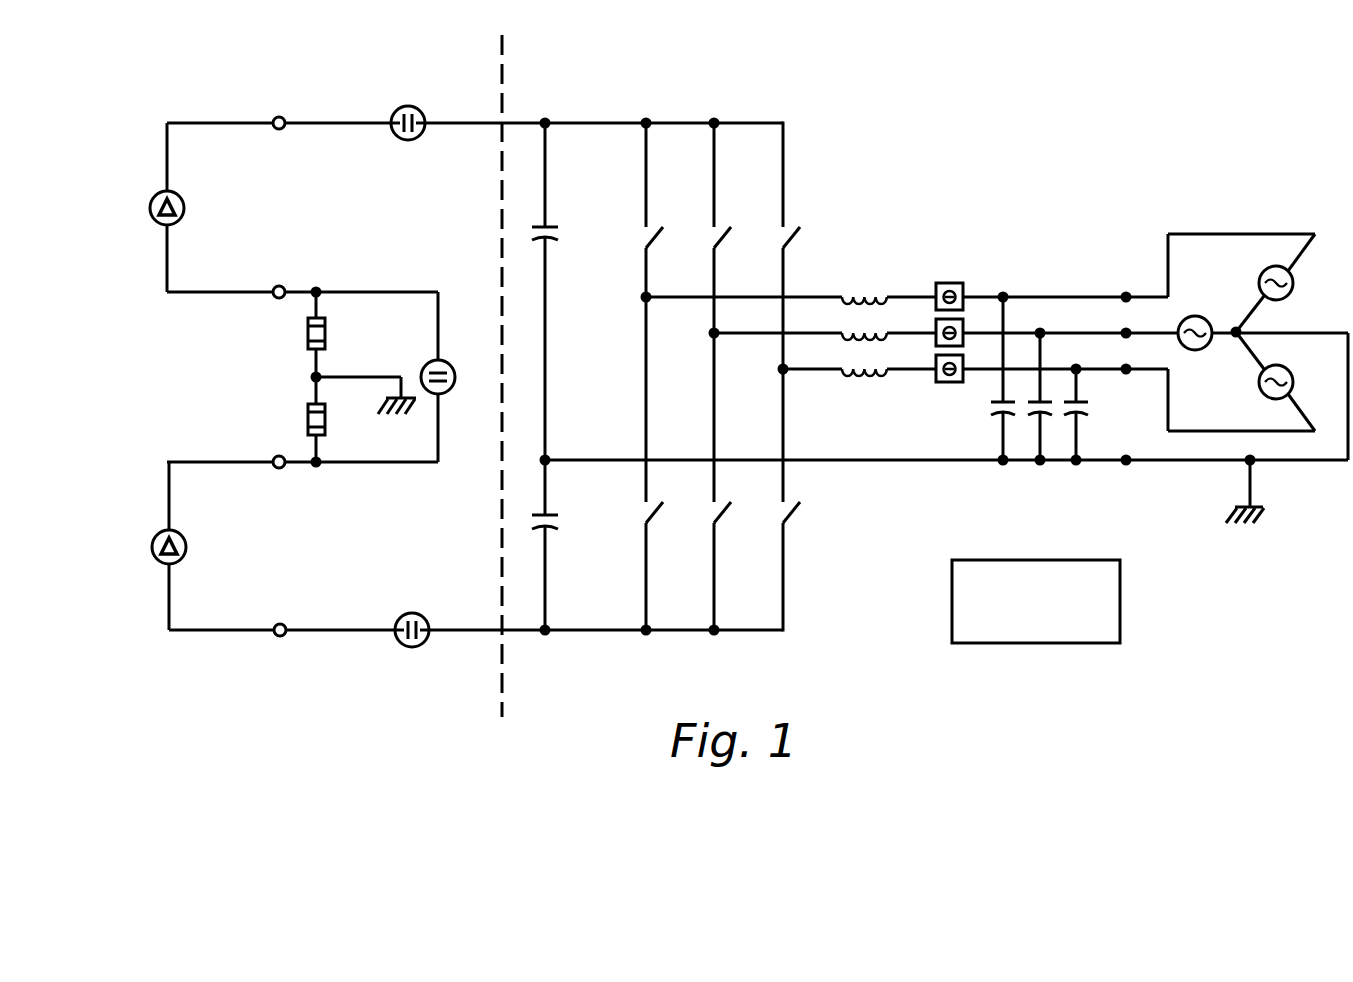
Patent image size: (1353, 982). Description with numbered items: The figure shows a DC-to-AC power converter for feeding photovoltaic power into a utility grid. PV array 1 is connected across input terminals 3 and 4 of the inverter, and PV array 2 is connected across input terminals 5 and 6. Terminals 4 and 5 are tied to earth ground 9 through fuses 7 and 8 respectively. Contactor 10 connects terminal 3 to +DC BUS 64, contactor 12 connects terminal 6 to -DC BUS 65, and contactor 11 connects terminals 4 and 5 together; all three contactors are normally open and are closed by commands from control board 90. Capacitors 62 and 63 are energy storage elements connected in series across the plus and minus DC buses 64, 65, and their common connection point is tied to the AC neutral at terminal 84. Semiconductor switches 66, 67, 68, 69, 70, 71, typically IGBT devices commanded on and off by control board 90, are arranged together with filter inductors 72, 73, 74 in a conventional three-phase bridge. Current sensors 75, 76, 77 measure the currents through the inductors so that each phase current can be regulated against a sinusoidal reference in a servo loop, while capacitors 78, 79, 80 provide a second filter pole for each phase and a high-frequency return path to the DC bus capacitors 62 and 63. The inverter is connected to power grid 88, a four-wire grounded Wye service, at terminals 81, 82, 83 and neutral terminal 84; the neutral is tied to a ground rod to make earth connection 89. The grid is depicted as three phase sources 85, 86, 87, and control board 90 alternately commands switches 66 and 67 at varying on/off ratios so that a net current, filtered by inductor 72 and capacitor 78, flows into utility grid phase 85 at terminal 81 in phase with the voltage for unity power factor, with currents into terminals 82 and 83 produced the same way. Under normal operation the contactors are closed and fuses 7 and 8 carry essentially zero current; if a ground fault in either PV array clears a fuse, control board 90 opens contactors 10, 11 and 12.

The PV array 1 is at (161, 207).
The PV array 2 is at (162, 546).
The input terminal 3 is at (279, 107).
The input terminal 4 is at (279, 276).
The input terminal 5 is at (279, 447).
The input terminal 6 is at (281, 614).
The fuse 7 is at (305, 333).
The fuse 8 is at (306, 420).
The earth ground 9 is at (366, 414).
The contactor 10 is at (408, 108).
The contactor 11 is at (455, 377).
The contactor 12 is at (412, 647).
The capacitor 62 is at (563, 291).
The capacitor 63 is at (563, 545).
The +DC BUS 64 is at (664, 105).
The -DC BUS 65 is at (678, 651).
The semiconductor switch 66 is at (665, 291).
The semiconductor switch 67 is at (665, 545).
The semiconductor switch 68 is at (733, 291).
The semiconductor switch 69 is at (733, 545).
The semiconductor switch 70 is at (802, 291).
The semiconductor switch 71 is at (802, 546).
The filter inductor 72 is at (864, 282).
The filter inductor 73 is at (881, 321).
The filter inductor 74 is at (864, 391).
The current sensor 75 is at (949, 280).
The current sensor 76 is at (967, 325).
The current sensor 77 is at (949, 386).
The capacitor 78 is at (1002, 394).
The capacitor 79 is at (1039, 412).
The capacitor 80 is at (1075, 430).
The terminal 81 is at (1124, 282).
The terminal 82 is at (1124, 319).
The terminal 83 is at (1124, 355).
The neutral terminal 84 is at (1124, 446).
The utility grid phase 85 is at (1292, 284).
The AC phase source 86 is at (1195, 350).
The AC phase source 87 is at (1292, 382).
The power grid 88 is at (1253, 327).
The earth connection 89 is at (1242, 506).
The control board 90 is at (1036, 601).